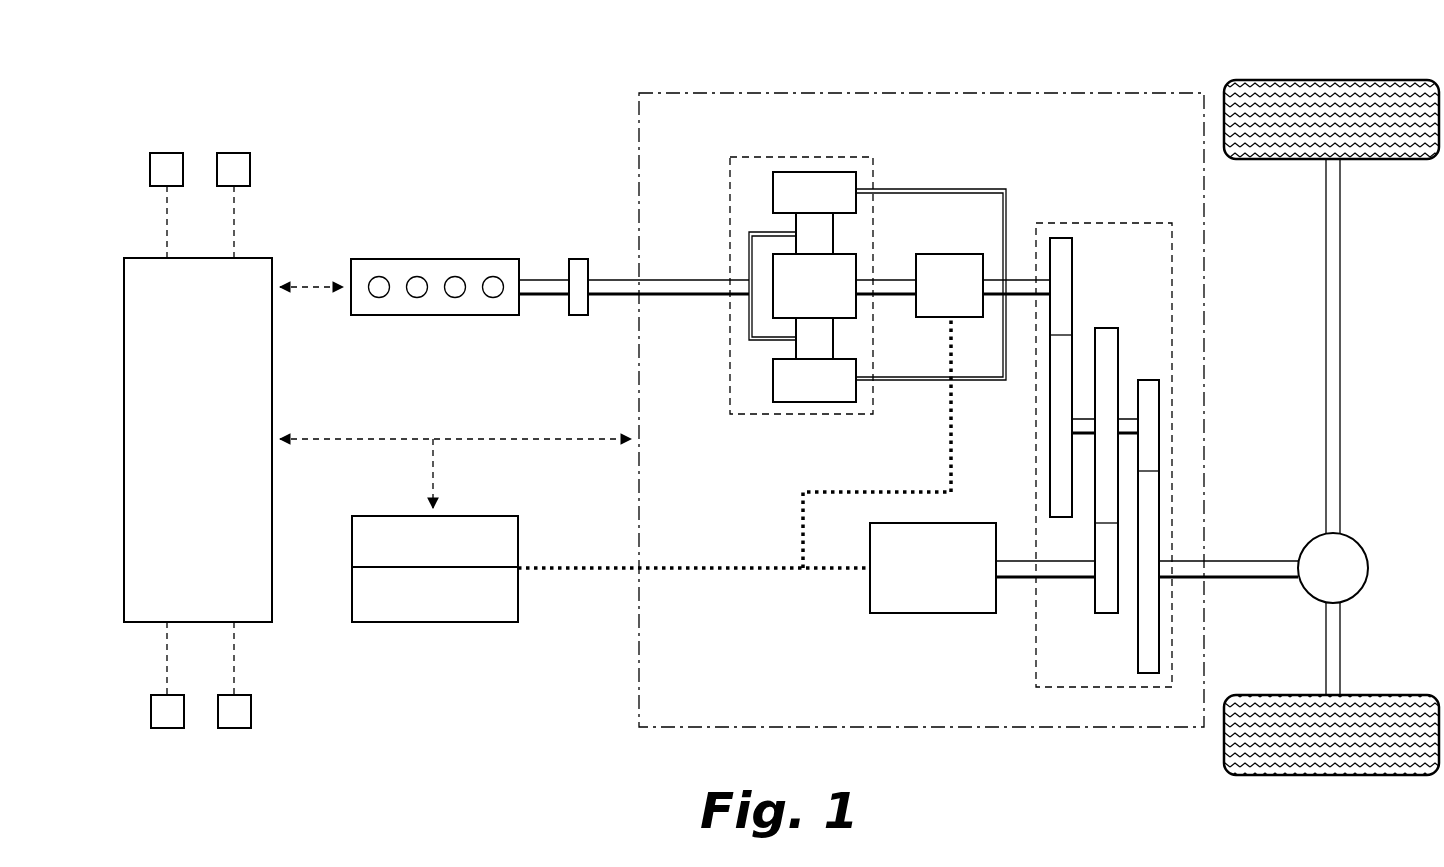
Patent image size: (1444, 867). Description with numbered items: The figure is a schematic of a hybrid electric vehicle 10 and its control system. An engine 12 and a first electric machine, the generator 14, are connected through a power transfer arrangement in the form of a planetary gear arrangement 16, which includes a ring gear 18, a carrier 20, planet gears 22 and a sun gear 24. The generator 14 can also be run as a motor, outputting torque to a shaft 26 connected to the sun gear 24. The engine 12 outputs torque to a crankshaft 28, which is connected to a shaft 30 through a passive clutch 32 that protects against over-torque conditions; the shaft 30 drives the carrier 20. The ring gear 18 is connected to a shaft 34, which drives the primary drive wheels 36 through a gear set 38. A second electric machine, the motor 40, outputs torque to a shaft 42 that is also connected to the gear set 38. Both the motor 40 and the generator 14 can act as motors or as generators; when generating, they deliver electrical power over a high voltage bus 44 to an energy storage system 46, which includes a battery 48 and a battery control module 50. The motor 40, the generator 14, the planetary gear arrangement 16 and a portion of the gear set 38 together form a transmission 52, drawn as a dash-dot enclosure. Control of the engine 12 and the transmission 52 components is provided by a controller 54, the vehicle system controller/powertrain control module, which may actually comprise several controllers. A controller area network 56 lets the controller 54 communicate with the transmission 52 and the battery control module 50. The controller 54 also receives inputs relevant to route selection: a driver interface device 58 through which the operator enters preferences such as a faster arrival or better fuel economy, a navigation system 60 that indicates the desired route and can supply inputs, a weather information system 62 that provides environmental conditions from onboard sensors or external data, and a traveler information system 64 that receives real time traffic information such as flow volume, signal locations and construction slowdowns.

The vehicle 10 is at (1158, 40).
The engine 12 is at (401, 258).
The generator 14 is at (946, 253).
The planetary gear arrangement 16 is at (803, 156).
The ring gear 18 is at (772, 188).
The carrier 20 is at (748, 253).
The planet gears 22 is at (795, 226).
The sun gear 24 is at (857, 315).
The shaft 26 is at (892, 279).
The crankshaft 28 is at (550, 297).
The shaft 30 is at (618, 297).
The passive clutch 32 is at (578, 258).
The shaft 34 is at (1028, 279).
The primary drive wheels 36 is at (1372, 165).
The gear set 38 is at (1113, 692).
The motor 40 is at (937, 614).
The shaft 42 is at (1020, 560).
The high voltage bus 44 is at (738, 567).
The energy storage system 46 is at (348, 560).
The battery 48 is at (492, 515).
The battery control module 50 is at (492, 623).
The transmission 52 is at (634, 135).
The vehicle system controller/powertrain control module 54 is at (252, 257).
The controller area network 56 is at (372, 438).
The driver interface device 58 is at (168, 729).
The navigation system 60 is at (234, 729).
The weather information system 62 is at (234, 152).
The traveler information system 64 is at (168, 152).